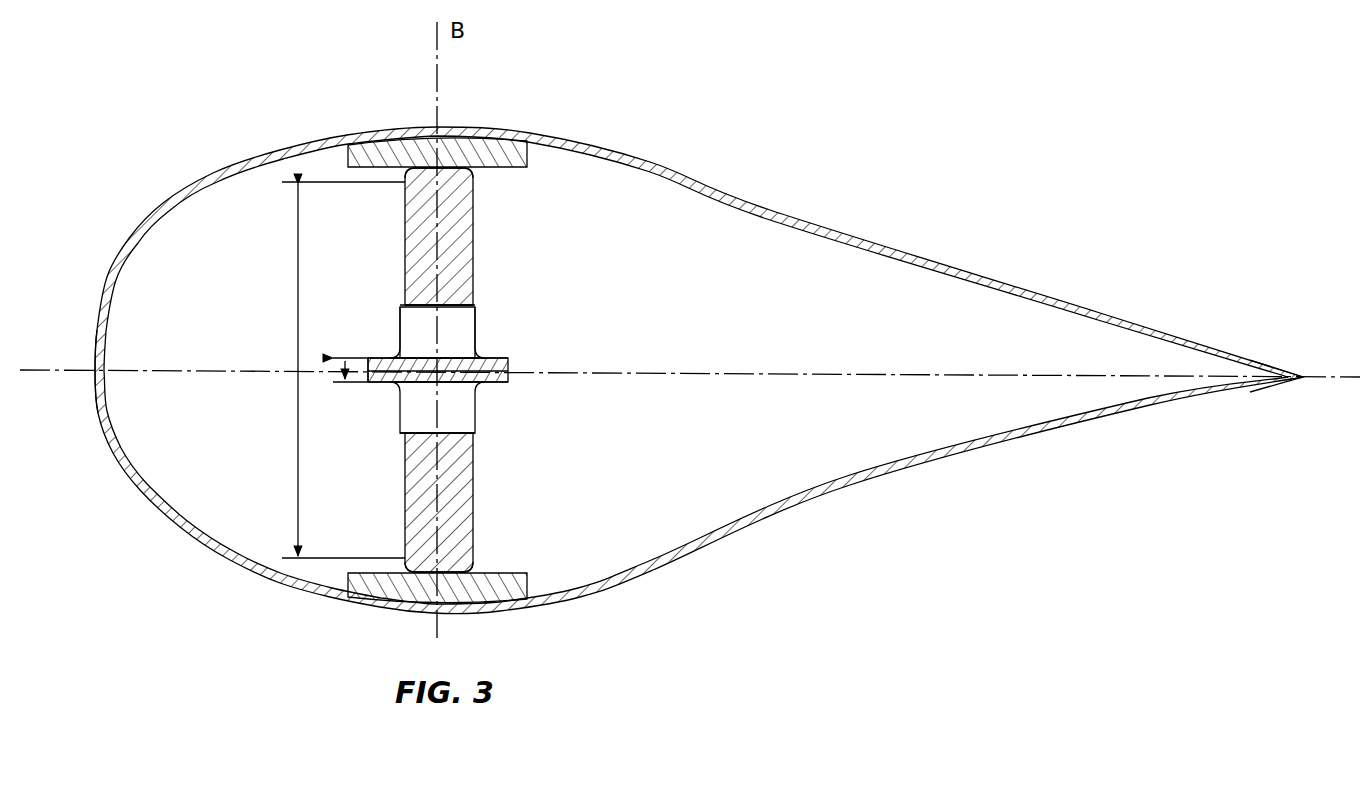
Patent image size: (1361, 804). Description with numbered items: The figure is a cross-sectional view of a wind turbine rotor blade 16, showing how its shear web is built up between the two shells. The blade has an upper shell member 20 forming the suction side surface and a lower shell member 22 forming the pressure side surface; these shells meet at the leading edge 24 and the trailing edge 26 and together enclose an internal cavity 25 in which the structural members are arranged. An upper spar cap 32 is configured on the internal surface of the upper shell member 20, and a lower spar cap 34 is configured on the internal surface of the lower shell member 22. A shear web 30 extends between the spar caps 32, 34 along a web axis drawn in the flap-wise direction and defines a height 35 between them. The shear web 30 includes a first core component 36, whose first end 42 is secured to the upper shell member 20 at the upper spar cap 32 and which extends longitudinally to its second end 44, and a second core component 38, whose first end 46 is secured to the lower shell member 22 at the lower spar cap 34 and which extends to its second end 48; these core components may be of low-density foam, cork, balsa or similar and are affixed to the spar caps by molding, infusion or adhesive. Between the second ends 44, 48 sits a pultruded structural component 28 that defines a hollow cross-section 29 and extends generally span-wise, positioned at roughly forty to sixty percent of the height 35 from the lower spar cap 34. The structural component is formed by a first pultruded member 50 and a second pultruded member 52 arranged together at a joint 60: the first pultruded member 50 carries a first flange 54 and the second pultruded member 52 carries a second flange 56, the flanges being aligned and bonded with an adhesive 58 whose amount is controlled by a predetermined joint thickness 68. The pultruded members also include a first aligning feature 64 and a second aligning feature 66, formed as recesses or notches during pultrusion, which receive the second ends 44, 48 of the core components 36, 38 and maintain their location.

The rotor blade 16 is at (1080, 190).
The upper shell member 20 is at (655, 165).
The lower shell member 22 is at (683, 550).
The leading edge 24 is at (95, 372).
The internal cavity 25 is at (826, 417).
The trailing edge 26 is at (1303, 378).
The structural component 28 is at (478, 347).
The hollow cross-section 29 is at (412, 338).
The shear web 30 is at (450, 370).
The upper spar cap 32 is at (530, 160).
The lower spar cap 34 is at (530, 576).
The height 35 is at (298, 283).
The first core component 36 is at (404, 229).
The second core component 38 is at (404, 498).
The first end of first core component 42 is at (440, 176).
The second end of first core component 44 is at (440, 300).
The first end of second core component 46 is at (433, 571).
The second end of second core component 48 is at (420, 440).
The first pultruded member 50 is at (477, 334).
The second pultruded member 52 is at (477, 440).
The first flange 54 is at (492, 357).
The second flange 56 is at (495, 383).
The adhesive 58 is at (500, 371).
The joint 60 is at (370, 366).
The first aligning feature 64 is at (400, 307).
The second aligning feature 66 is at (400, 435).
The predetermined joint thickness 68 is at (345, 370).